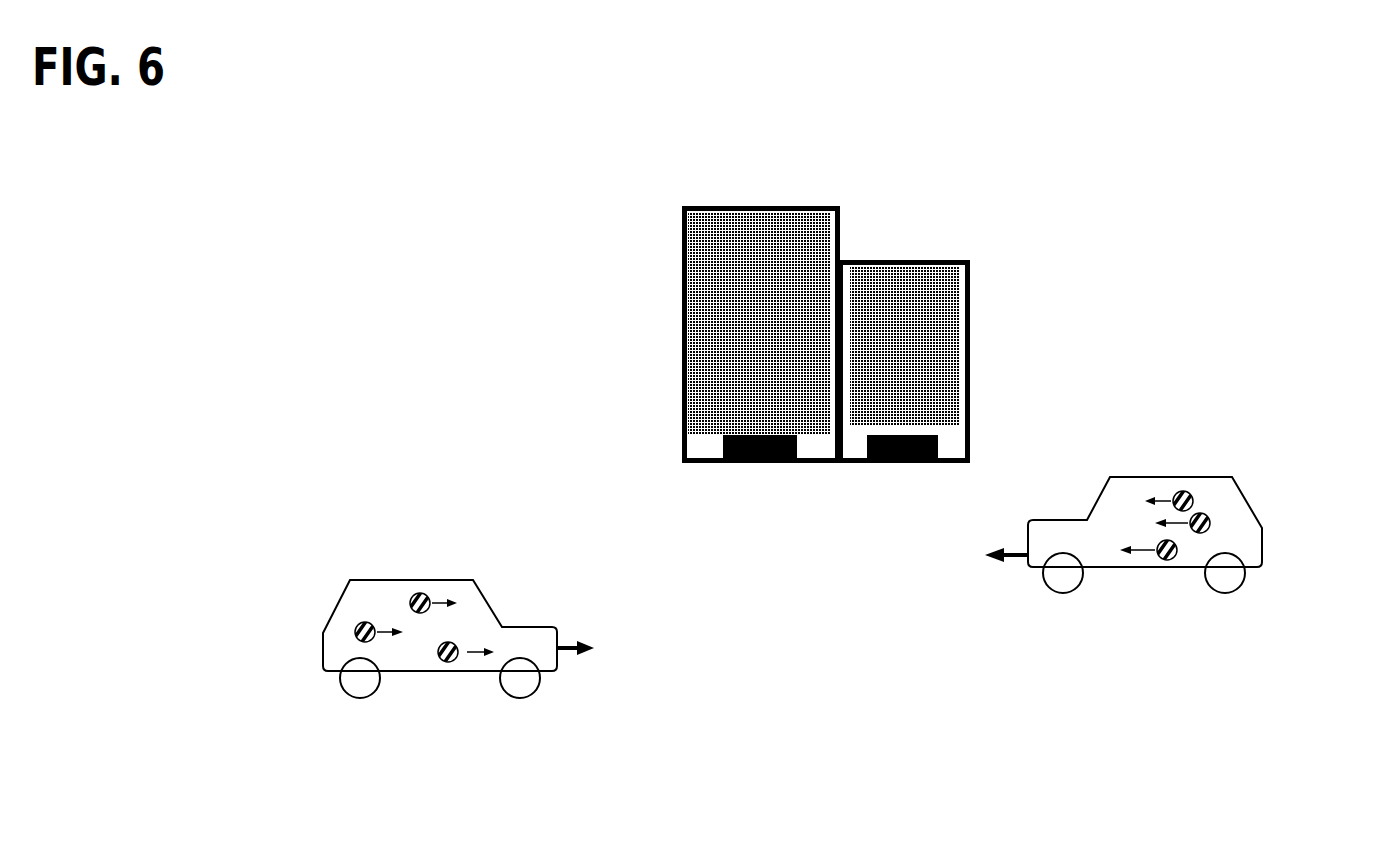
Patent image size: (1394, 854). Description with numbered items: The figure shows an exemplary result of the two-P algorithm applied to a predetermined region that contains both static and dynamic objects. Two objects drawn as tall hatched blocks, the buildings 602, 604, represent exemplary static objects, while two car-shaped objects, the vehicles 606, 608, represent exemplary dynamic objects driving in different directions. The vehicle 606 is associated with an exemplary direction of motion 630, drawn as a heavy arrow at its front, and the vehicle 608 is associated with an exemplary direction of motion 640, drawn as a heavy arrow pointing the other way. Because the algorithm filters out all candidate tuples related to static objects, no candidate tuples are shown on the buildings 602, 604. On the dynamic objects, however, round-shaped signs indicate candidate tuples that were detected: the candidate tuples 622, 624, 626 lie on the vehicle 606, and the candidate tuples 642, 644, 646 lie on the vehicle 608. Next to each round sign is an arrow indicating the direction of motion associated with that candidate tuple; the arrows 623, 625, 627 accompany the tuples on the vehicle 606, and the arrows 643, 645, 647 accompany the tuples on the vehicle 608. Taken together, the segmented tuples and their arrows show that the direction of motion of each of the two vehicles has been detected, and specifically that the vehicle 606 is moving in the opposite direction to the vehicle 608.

The building 602 is at (895, 259).
The building 604 is at (760, 204).
The vehicle 606 is at (1150, 474).
The vehicle 608 is at (432, 577).
The candidate tuple 622 is at (1167, 561).
The direction of motion arrow 623 is at (1137, 553).
The candidate tuple 624 is at (1194, 500).
The direction of motion arrow 625 is at (1146, 500).
The candidate tuple 626 is at (1206, 528).
The direction of motion arrow 627 is at (1153, 525).
The direction of motion 630 is at (987, 562).
The direction of motion 640 is at (590, 652).
The candidate tuple 642 is at (438, 647).
The direction of motion arrow 643 is at (470, 648).
The candidate tuple 644 is at (407, 603).
The direction of motion arrow 645 is at (455, 602).
The candidate tuple 646 is at (355, 633).
The direction of motion arrow 647 is at (362, 642).